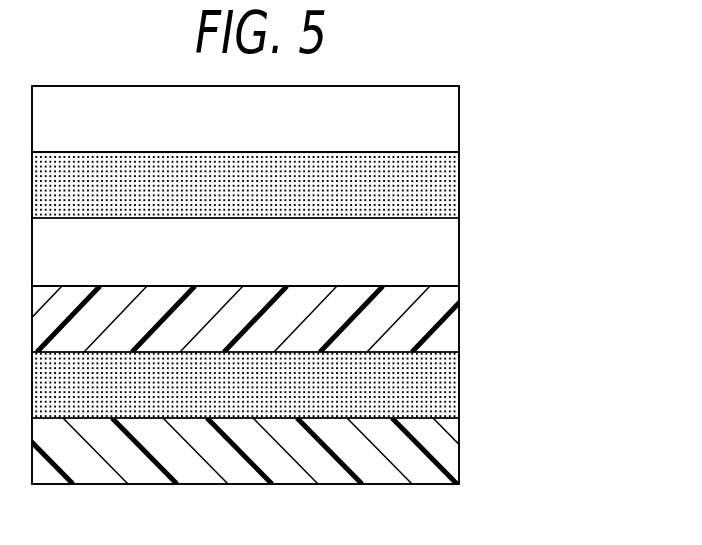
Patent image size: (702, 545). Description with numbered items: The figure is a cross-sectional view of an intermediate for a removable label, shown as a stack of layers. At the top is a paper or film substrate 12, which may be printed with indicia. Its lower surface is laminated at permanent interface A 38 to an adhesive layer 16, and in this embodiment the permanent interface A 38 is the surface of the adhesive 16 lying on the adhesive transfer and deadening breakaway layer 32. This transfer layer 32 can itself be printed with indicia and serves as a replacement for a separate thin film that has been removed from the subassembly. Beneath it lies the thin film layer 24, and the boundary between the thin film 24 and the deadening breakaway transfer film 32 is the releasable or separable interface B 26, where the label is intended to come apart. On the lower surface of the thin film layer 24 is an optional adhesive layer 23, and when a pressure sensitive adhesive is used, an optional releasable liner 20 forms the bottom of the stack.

The paper or film substrate 12 is at (459, 117).
The permanent interface A 38 is at (459, 157).
The adhesive layer 16 is at (459, 175).
The adhesive transfer and deadening breakaway layer 32 is at (459, 242).
The separable interface B 26 is at (459, 287).
The thin film layer 24 is at (459, 323).
The adhesive layer 23 is at (459, 380).
The releasable liner 20 is at (459, 463).